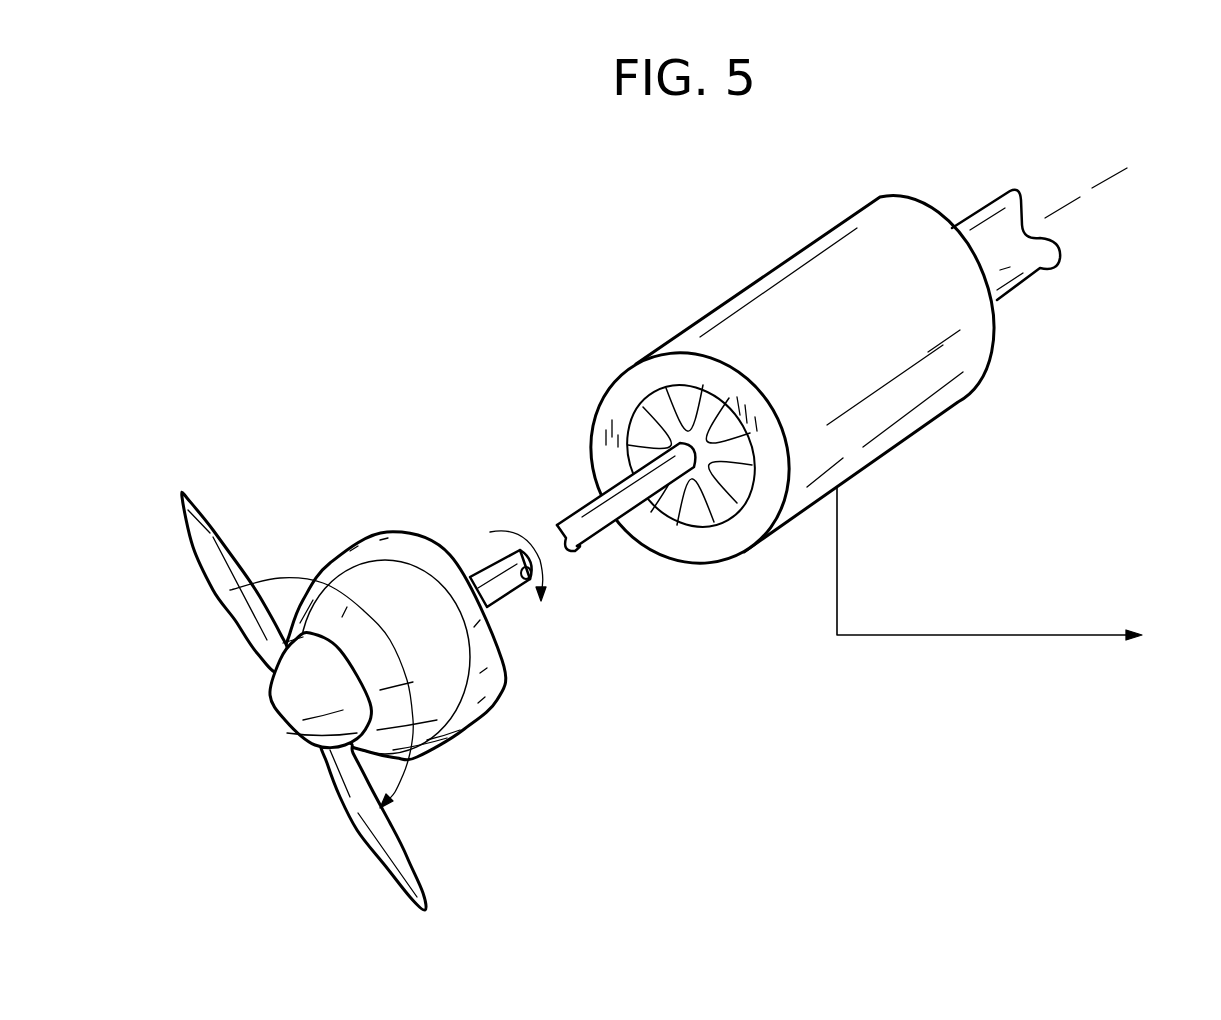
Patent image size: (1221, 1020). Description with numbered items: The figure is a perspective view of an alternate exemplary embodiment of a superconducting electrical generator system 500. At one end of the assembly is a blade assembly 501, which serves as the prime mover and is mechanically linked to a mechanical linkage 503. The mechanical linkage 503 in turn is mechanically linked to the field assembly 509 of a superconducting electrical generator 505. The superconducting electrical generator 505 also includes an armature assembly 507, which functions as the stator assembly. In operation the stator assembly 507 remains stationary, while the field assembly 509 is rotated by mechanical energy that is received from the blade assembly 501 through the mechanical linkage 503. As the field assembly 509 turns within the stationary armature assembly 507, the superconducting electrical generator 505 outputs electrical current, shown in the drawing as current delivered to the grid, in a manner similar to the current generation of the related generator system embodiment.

The superconducting electrical generator system 500 is at (393, 262).
The blade assembly 501 is at (250, 623).
The mechanical linkage 503 is at (394, 626).
The superconducting electrical generator 505 is at (668, 308).
The armature assembly 507 is at (882, 410).
The field assembly 509 is at (705, 525).